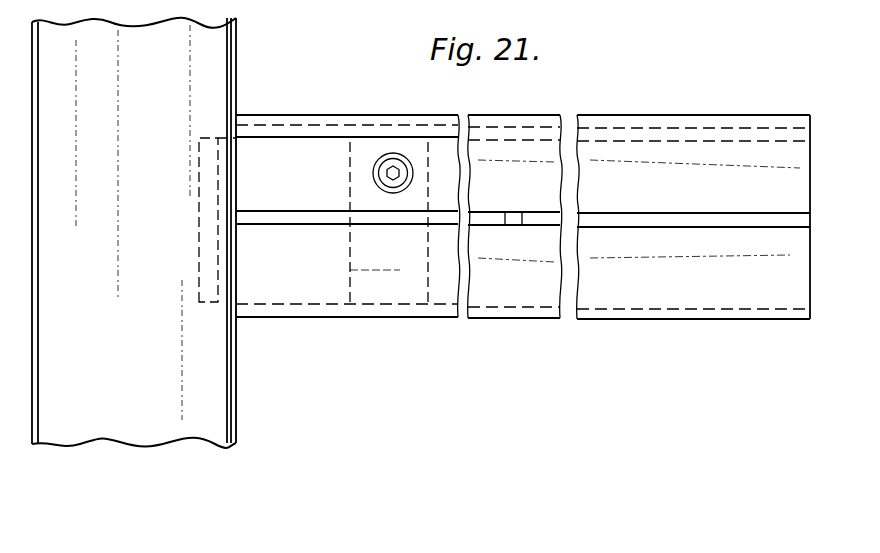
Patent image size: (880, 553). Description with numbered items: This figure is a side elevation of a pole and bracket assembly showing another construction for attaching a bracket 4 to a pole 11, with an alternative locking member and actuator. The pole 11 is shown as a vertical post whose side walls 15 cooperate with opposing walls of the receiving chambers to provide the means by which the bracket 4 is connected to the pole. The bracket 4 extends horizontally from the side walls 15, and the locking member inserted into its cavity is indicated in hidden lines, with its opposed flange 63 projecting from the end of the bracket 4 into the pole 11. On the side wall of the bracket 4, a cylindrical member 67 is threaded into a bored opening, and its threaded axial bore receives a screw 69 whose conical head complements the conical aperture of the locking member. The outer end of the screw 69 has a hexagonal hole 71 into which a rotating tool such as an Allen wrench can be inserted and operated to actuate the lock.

The bracket 4 is at (614, 326).
The pole 11 is at (132, 347).
The side walls 15 is at (236, 367).
The opposed flange 63 is at (208, 180).
The cylindrical member 67 is at (373, 171).
The screw 69 is at (394, 166).
The hexagonal hole 71 is at (393, 181).